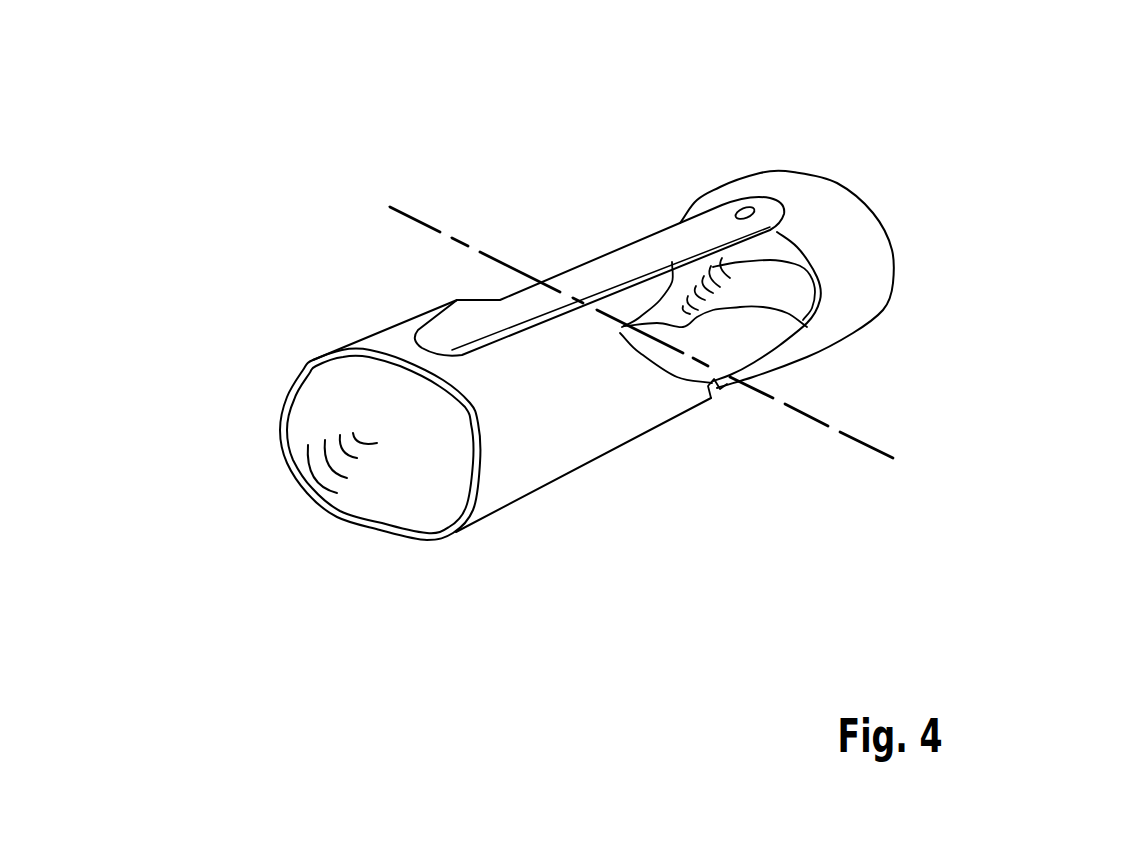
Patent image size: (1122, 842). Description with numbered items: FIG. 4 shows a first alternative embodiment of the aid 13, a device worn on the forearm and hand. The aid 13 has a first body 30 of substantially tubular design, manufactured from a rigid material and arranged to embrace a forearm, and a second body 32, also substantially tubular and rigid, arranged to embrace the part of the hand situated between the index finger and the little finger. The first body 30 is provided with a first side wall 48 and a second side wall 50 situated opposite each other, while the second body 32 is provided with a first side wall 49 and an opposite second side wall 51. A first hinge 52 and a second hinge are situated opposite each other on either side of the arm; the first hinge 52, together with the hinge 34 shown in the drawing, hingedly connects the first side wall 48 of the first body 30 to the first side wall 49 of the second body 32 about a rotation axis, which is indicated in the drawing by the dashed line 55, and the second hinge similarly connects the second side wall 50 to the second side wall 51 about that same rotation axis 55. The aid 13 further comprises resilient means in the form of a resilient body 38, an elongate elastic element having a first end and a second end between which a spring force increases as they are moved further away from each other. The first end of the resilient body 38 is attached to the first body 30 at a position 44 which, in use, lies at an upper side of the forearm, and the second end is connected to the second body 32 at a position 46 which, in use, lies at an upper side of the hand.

The aid 13 is at (842, 157).
The first body 30 is at (515, 462).
The second body 32 is at (866, 248).
The first hinge 34 is at (726, 391).
The resilient body 38 is at (613, 253).
The position 44 is at (428, 333).
The position 46 is at (743, 208).
The first side wall 48 is at (592, 428).
The first side wall 49 is at (848, 301).
The second side wall 50 is at (280, 398).
The second side wall 51 is at (693, 280).
The first hinge 52 is at (717, 398).
The rotation axis 55 is at (860, 440).